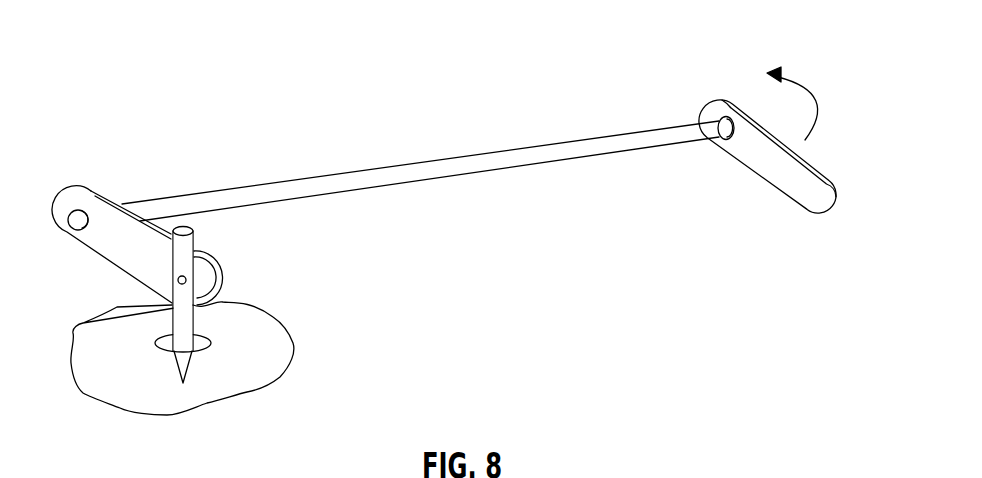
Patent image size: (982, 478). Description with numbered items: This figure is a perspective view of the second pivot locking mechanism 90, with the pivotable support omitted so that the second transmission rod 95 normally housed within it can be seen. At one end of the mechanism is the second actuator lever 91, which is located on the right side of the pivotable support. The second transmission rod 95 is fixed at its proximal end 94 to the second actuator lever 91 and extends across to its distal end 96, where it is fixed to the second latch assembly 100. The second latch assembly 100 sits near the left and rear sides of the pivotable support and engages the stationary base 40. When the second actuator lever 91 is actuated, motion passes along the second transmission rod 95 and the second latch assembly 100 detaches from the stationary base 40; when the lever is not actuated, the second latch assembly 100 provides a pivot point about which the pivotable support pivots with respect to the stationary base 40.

The stationary base 40 is at (222, 393).
The second pivot locking mechanism 90 is at (500, 216).
The second actuator lever 91 is at (778, 183).
The proximal end 94 is at (683, 120).
The second transmission rod 95 is at (452, 158).
The distal end 96 is at (137, 200).
The second latch assembly 100 is at (154, 318).